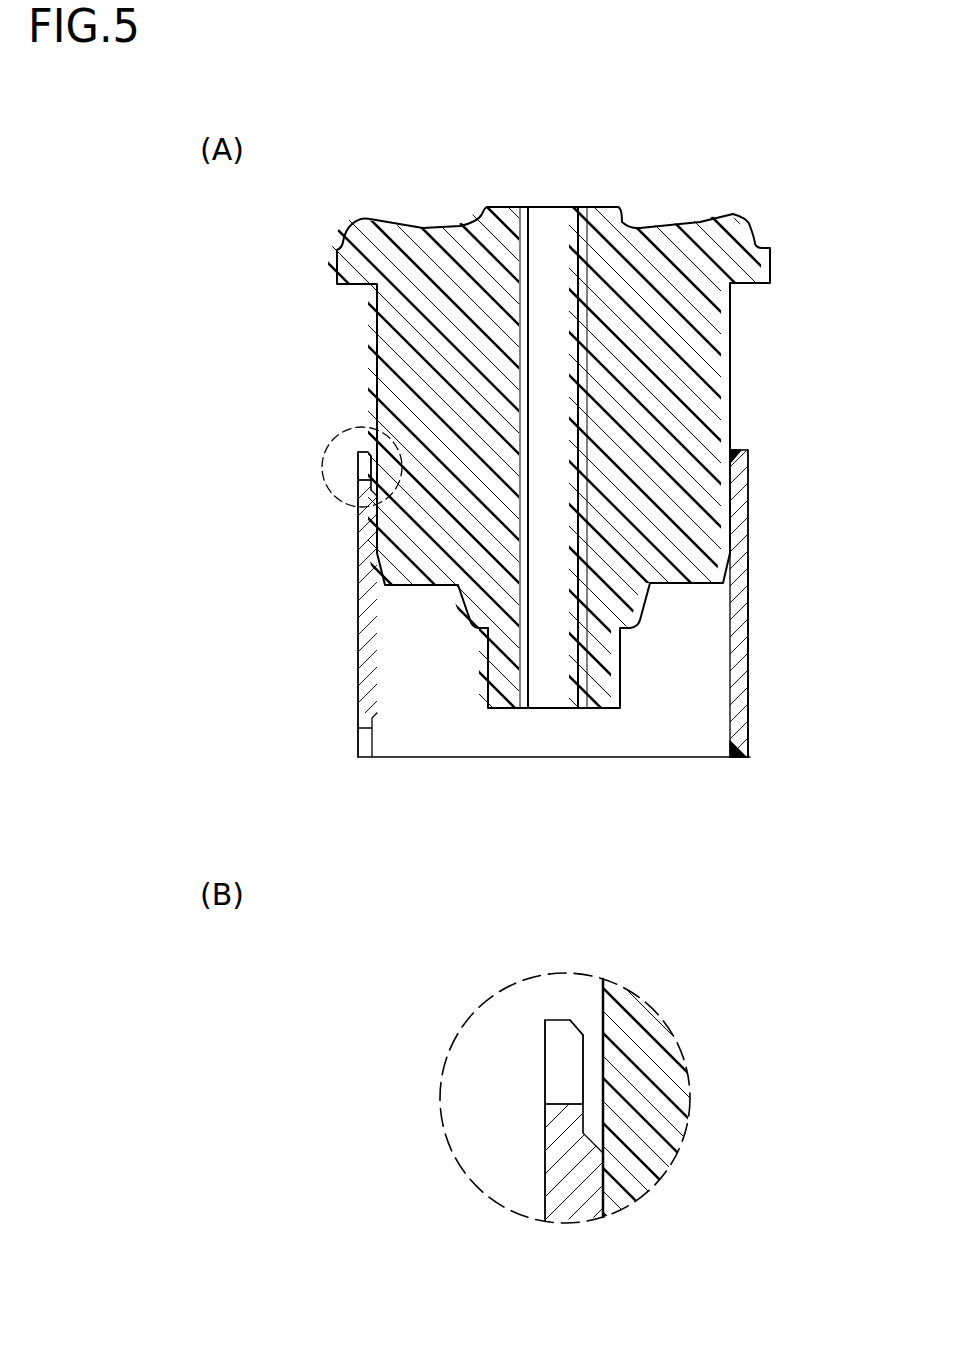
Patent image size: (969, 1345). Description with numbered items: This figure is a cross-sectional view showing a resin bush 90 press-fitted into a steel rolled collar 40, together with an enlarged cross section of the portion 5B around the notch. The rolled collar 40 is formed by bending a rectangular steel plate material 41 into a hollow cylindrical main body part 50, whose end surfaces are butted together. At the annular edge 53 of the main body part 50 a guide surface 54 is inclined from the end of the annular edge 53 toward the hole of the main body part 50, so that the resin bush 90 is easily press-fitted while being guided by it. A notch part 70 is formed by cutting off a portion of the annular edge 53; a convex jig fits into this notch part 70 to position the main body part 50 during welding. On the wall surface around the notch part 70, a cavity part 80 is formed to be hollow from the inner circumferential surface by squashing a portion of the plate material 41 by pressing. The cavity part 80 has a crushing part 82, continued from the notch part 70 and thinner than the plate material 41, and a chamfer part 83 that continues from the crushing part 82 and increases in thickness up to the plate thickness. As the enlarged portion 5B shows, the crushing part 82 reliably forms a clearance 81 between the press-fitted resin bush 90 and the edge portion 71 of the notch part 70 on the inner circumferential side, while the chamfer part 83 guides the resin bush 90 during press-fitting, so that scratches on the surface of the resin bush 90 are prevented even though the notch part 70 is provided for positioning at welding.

The resin bush 90 is at (736, 212).
The notch part 70 is at (358, 498).
The plate material 41 is at (575, 1215).
The annular edge 53 is at (749, 451).
The guide surface 54 is at (739, 451).
The rolled collar 40 is at (750, 614).
The main body part 50 is at (750, 707).
The cavity part 80 is at (376, 718).
The clearance 81 is at (366, 450).
The crushing part 82 is at (605, 1118).
The chamfer part 83 is at (606, 1148).
The edge portion 71 is at (593, 1085).
The portion 5B is at (325, 470).